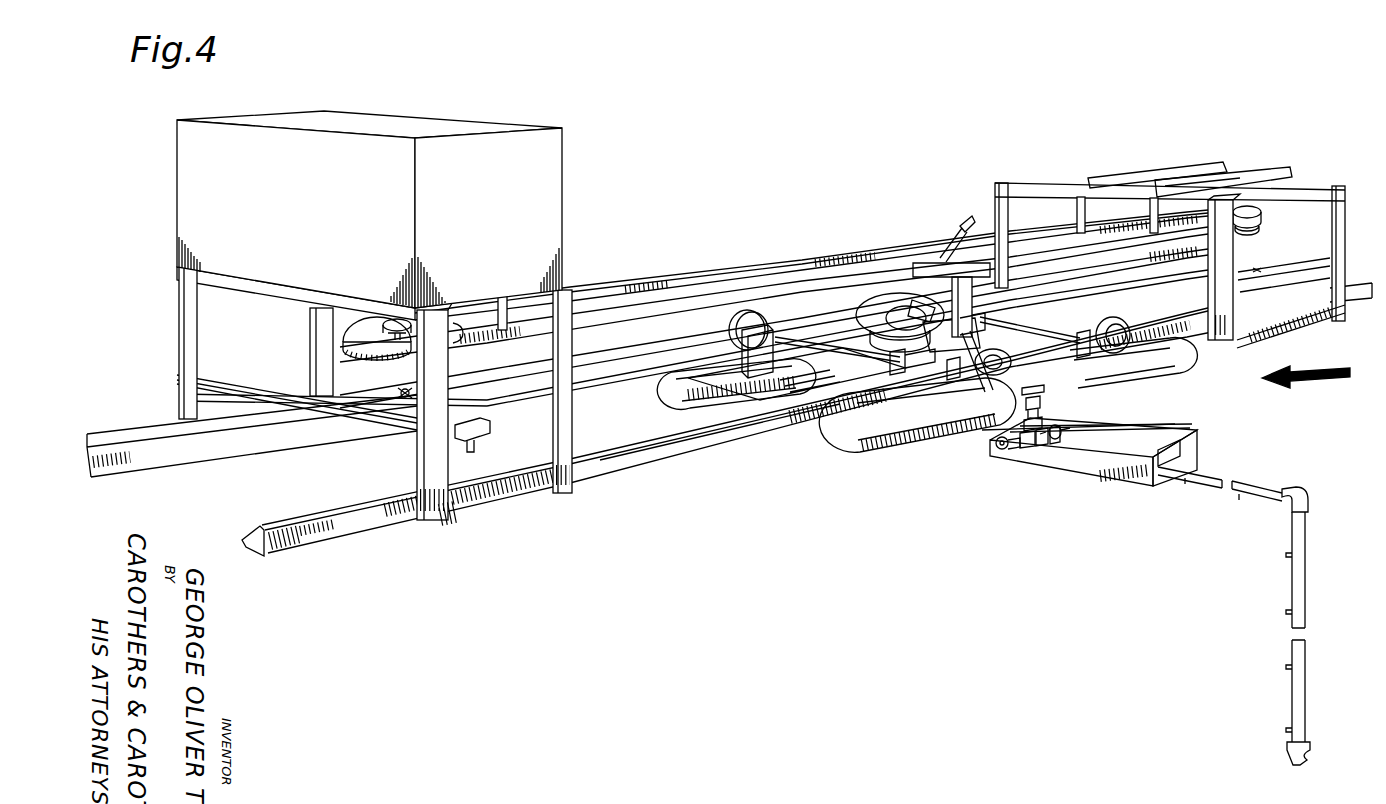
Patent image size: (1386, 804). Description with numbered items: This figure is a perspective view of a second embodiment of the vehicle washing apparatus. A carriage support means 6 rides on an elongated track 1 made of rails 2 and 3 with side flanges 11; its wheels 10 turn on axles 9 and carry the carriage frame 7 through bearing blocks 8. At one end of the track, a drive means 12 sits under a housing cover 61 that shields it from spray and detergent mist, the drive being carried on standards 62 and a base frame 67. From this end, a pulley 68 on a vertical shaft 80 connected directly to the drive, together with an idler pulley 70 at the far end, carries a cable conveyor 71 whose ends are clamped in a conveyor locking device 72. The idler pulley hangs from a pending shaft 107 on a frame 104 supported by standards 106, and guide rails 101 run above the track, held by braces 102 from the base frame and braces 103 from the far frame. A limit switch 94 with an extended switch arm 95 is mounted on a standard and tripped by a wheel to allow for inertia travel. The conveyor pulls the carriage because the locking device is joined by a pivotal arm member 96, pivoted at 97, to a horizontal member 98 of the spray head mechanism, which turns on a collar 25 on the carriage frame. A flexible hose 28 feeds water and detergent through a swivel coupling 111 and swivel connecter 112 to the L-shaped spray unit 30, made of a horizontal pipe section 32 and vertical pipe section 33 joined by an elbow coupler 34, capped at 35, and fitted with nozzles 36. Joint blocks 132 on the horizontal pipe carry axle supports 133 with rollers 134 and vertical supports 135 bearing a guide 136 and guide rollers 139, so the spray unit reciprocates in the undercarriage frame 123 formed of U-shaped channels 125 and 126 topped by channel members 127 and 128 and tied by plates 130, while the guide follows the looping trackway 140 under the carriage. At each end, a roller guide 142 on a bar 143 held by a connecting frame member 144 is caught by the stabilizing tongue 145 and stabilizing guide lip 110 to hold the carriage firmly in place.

The elongated track 1 is at (640, 440).
The rail 2 is at (590, 383).
The rail 3 is at (605, 457).
The carriage support means 6 is at (828, 425).
The frame 7 is at (832, 372).
The bearing blocks 8 is at (775, 370).
The axles 9 is at (820, 358).
The wheels 10 is at (730, 318).
The side flanges 11 is at (655, 465).
The drive means 12 is at (560, 196).
The collar 25 is at (925, 380).
The flexible hose 28 is at (955, 228).
The L-shaped spray unit 30 is at (1269, 630).
The horizontal pipe section 32 is at (975, 462).
The vertical pipe section 33 is at (1306, 582).
The elbow coupler 34 is at (1308, 498).
The cap 35 is at (1298, 764).
The nozzles 36 is at (1240, 498).
The housing cover 61 is at (393, 190).
The standards 62 is at (310, 325).
The base frame 67 is at (232, 275).
The pulley 68 is at (340, 344).
The idler pulley 70 is at (1258, 210).
The conveyor 71 is at (462, 322).
The conveyor locking device 72 is at (922, 235).
The shaft 80 is at (385, 318).
The control switch means 94 is at (490, 425).
The limit switch arm 95 is at (476, 446).
The pivotal arm member 96 is at (988, 320).
The pivot connection 97 is at (970, 420).
The horizontal member 98 is at (918, 322).
The guide rails 101 is at (505, 345).
The braces 102 is at (505, 293).
The braces 103 is at (1150, 200).
The frame 104 is at (1150, 170).
The standards 106 is at (995, 213).
The pending shaft 107 is at (1222, 176).
The stabilizing guide lip 110 is at (955, 380).
The swivel coupling 111 is at (973, 298).
The swivel connecter 112 is at (915, 300).
The undercarriage frame 123 is at (1158, 488).
The U-shaped channel 125 is at (1120, 470).
The U-shaped channel 126 is at (1200, 458).
The U-shaped channel member 127 is at (1138, 425).
The U-shaped channel member 128 is at (1200, 438).
The plates 130 is at (1190, 428).
The joint blocks 132 is at (1040, 450).
The axle support 133 is at (1018, 452).
The rollers 134 is at (1010, 450).
The vertical support 135 is at (1034, 395).
The guide 136 is at (1040, 385).
The guide roller 139 is at (1058, 446).
The looping trackway 140 is at (870, 450).
The roller guide 142 is at (398, 390).
The bar 143 is at (383, 410).
The connecting frame member 144 is at (248, 388).
The stabilizing tongue 145 is at (876, 368).